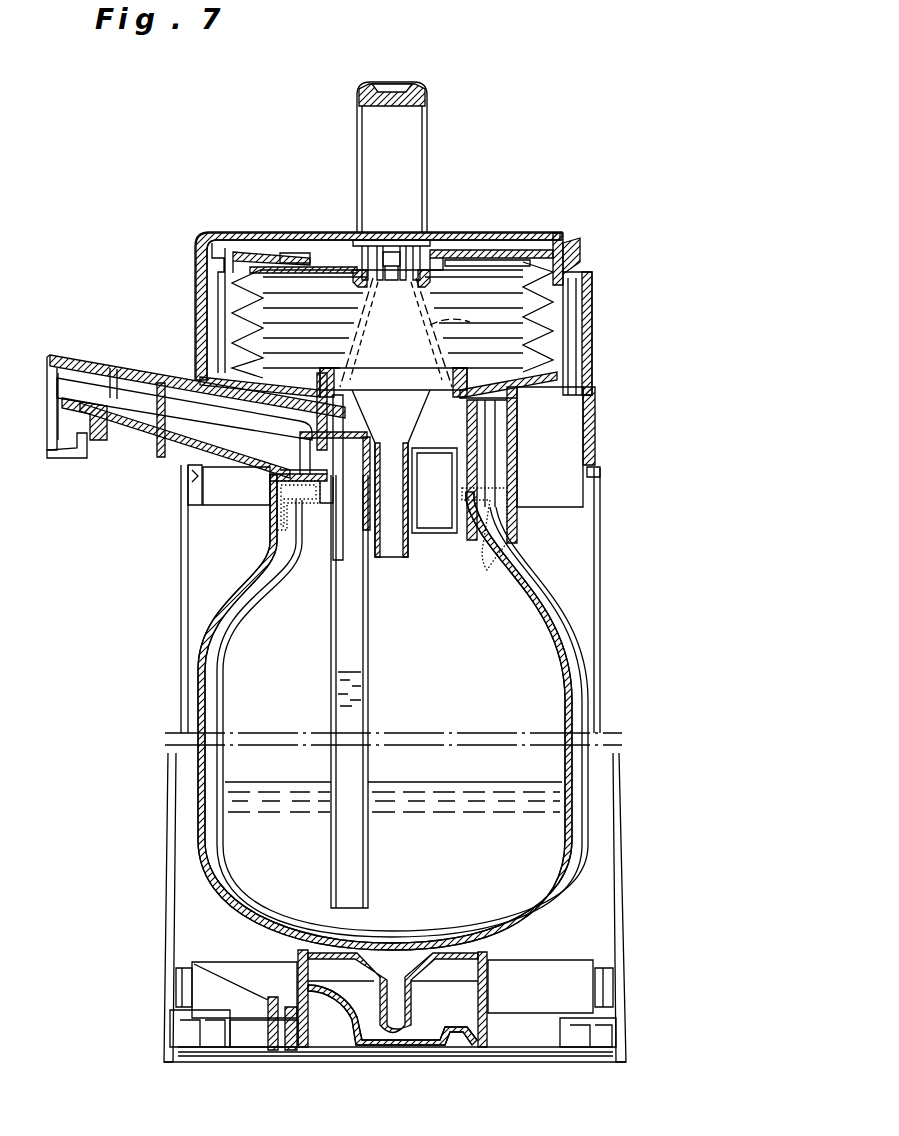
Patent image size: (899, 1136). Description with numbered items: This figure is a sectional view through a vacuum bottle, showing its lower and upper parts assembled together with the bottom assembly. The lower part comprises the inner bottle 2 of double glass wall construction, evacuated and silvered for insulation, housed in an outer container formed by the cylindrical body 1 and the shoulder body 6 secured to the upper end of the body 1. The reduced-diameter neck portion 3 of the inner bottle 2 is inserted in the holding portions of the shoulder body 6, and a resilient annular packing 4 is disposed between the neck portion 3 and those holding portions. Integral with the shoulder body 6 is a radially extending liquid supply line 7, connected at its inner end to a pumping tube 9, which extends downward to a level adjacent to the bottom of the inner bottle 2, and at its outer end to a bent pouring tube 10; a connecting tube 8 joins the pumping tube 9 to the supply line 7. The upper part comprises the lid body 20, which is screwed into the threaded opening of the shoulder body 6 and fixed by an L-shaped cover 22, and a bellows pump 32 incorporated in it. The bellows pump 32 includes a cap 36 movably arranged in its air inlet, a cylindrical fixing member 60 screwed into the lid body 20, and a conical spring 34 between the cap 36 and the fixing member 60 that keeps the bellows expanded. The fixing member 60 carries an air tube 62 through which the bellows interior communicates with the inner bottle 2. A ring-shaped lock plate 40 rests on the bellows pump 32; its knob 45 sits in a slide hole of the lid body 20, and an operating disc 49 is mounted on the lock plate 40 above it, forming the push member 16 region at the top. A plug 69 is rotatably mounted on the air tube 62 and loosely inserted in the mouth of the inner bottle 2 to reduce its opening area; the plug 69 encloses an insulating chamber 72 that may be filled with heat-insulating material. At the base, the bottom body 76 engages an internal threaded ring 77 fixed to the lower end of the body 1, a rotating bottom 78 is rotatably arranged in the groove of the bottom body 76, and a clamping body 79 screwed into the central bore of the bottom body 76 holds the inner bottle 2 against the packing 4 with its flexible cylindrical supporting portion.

The cylindrical body 1 is at (602, 680).
The inner bottle 2 is at (572, 613).
The neck portion 3 is at (335, 555).
The resilient annular packing 4 is at (290, 496).
The shoulder body 6 is at (595, 418).
The liquid supply line 7 is at (238, 468).
The connecting tube 8 is at (300, 472).
The pumping tube 9 is at (333, 625).
The pouring tube 10 is at (108, 440).
The push button tube 16 is at (427, 120).
The lid body 20 is at (592, 293).
The L-shaped cover 22 is at (130, 370).
The bellows pump 32 is at (548, 315).
The conical spring 34 is at (467, 314).
The cap 36 is at (383, 243).
The lock plate 40 is at (480, 250).
The knob 45 is at (582, 256).
The operating disc 49 is at (520, 232).
The cylindrical fixing member 60 is at (386, 375).
The air tube 62 is at (415, 547).
The plug 69 is at (455, 560).
The insulating chamber 72 is at (478, 484).
The bottom body 76 is at (530, 1055).
The internal threaded ring 77 is at (612, 985).
The rotating bottom 78 is at (590, 1062).
The clamping body 79 is at (428, 1055).